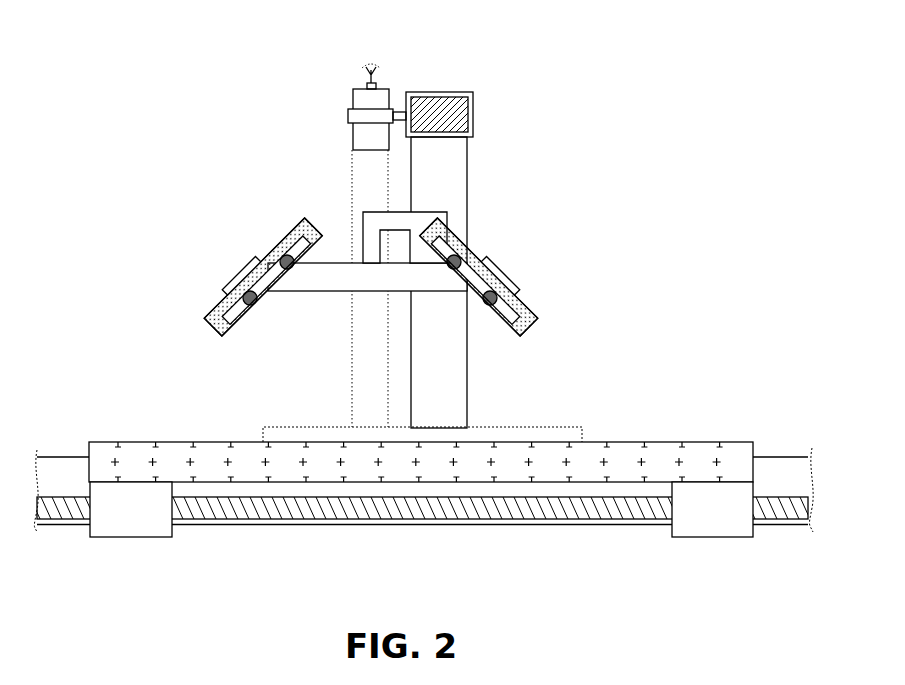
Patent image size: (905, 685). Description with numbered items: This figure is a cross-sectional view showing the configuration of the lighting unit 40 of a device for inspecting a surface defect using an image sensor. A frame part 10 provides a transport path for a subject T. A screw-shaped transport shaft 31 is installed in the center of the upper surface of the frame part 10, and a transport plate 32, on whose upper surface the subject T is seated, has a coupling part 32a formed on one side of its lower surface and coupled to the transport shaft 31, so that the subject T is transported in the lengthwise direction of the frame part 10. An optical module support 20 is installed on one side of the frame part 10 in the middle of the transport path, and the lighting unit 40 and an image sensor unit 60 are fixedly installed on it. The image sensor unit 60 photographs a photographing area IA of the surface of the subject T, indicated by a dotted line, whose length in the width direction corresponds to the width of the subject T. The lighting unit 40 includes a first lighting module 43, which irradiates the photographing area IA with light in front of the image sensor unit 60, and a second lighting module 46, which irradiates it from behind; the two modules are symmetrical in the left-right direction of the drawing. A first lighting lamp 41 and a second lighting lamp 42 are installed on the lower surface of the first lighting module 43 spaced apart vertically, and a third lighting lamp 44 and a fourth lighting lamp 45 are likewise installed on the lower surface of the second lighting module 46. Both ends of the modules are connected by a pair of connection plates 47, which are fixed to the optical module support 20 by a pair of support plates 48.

The frame part 10 is at (770, 455).
The optical module support 20 is at (452, 165).
The transport shaft 31 is at (605, 525).
The transport plate 32 is at (685, 440).
The coupling part 32a is at (131, 537).
The lighting unit 40 is at (233, 242).
The first lighting lamp 41 is at (256, 306).
The second lighting lamp 42 is at (292, 270).
The first lighting module 43 is at (213, 307).
The third lighting lamp 44 is at (450, 268).
The fourth lighting lamp 45 is at (489, 302).
The second lighting module 46 is at (537, 308).
The connection plate 47 is at (505, 275).
The support plate 48 is at (449, 220).
The image sensor unit 60 is at (352, 137).
The subject T is at (265, 427).
The photographing area IA is at (378, 388).